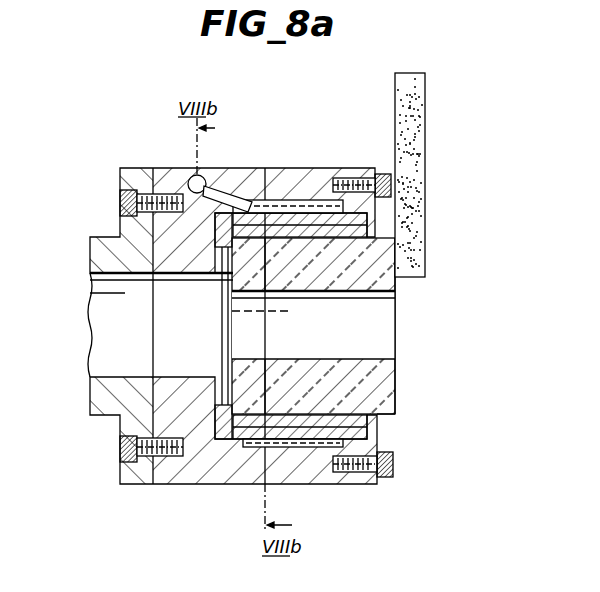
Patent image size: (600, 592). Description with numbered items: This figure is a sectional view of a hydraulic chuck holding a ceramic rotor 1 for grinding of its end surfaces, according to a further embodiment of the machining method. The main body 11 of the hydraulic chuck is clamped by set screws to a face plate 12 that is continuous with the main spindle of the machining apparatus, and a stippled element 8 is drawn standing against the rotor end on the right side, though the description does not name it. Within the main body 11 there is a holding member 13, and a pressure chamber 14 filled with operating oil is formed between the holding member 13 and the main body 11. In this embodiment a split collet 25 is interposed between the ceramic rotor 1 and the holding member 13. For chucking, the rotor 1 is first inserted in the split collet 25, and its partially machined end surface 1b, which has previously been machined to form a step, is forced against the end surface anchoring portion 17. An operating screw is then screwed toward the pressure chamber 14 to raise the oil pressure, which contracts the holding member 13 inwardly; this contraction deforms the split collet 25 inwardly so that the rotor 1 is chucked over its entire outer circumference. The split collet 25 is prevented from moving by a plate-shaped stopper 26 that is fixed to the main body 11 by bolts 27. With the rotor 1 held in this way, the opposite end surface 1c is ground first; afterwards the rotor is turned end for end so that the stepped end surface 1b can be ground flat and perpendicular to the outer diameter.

The ceramic rotor 1 is at (392, 417).
The end surface 1b is at (217, 410).
The end surface 1c is at (397, 403).
The wall 8 is at (418, 206).
The main body 11 is at (175, 168).
The face plate 12 is at (127, 178).
The holding member 13 is at (305, 225).
The pressure chamber 14 is at (273, 212).
The end surface anchoring portion 17 is at (228, 212).
The split collet 25 is at (349, 228).
The plate-shaped stopper 26 is at (376, 484).
The bolts 27 is at (393, 478).